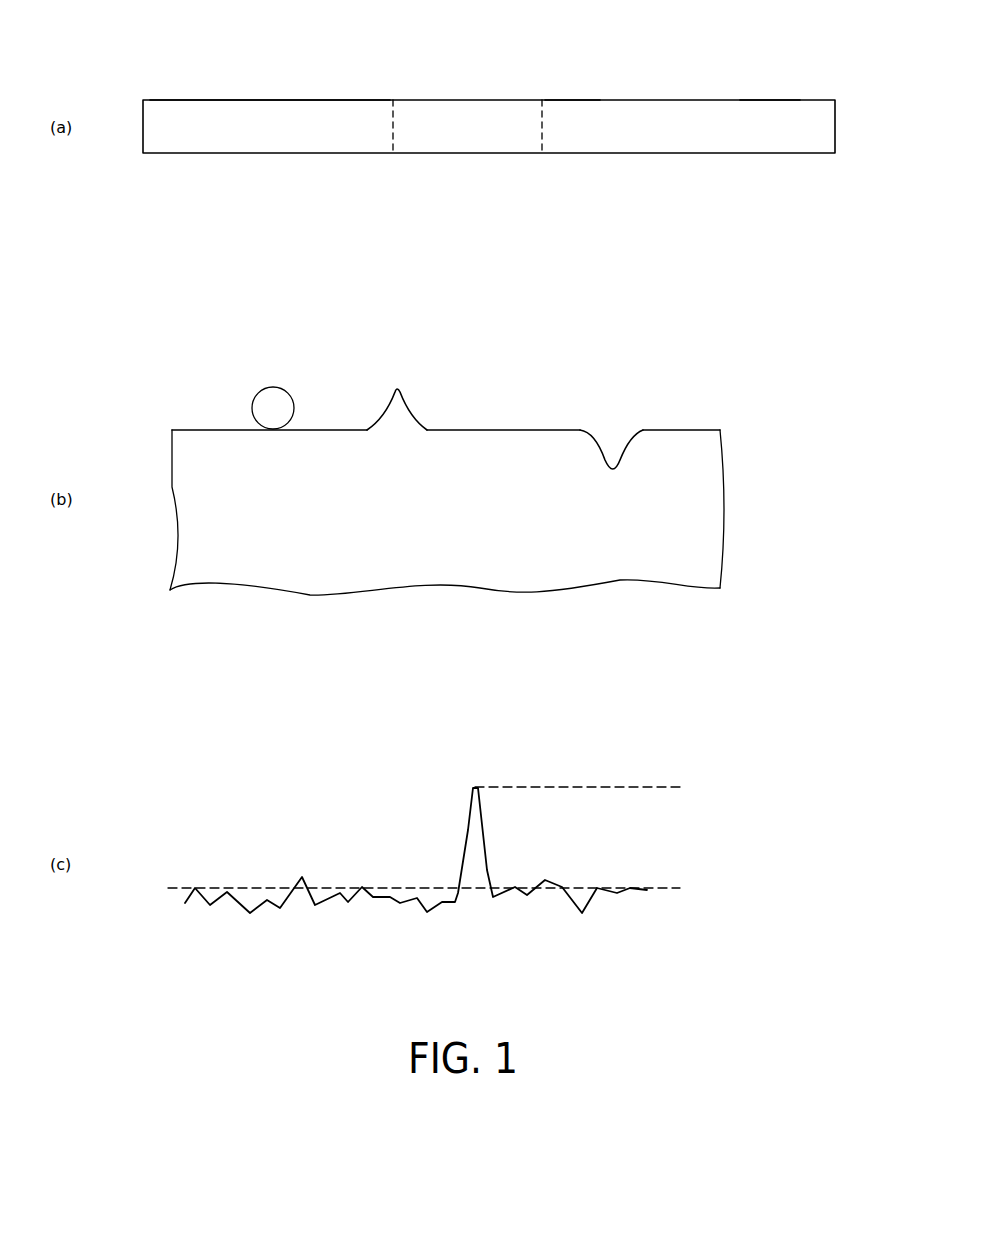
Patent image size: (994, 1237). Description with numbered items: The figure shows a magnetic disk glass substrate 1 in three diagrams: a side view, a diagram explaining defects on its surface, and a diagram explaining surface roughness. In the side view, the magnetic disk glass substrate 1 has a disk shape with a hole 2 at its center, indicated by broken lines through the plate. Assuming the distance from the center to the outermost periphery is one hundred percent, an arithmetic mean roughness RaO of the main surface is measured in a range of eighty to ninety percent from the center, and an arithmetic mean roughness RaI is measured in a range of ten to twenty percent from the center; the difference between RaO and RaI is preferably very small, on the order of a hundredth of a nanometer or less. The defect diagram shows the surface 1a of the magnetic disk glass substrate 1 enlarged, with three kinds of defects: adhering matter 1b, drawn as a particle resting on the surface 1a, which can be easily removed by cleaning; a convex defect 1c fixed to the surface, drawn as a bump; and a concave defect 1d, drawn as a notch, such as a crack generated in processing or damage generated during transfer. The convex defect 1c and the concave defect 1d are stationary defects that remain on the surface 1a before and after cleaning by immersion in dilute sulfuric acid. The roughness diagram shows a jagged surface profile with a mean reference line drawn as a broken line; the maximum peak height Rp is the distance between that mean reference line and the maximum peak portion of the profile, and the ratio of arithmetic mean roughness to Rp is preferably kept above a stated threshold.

The magnetic disk glass substrate 1 is at (675, 128).
The surface 1a is at (212, 100).
The adhering matter 1b is at (275, 406).
The convex defect 1c is at (395, 422).
The concave defect 1d is at (613, 442).
The hole 2 is at (492, 128).
The arithmetic mean roughness of inner range RaI is at (567, 100).
The arithmetic mean roughness of outer range RaO is at (763, 100).
The maximum peak height Rp is at (632, 787).